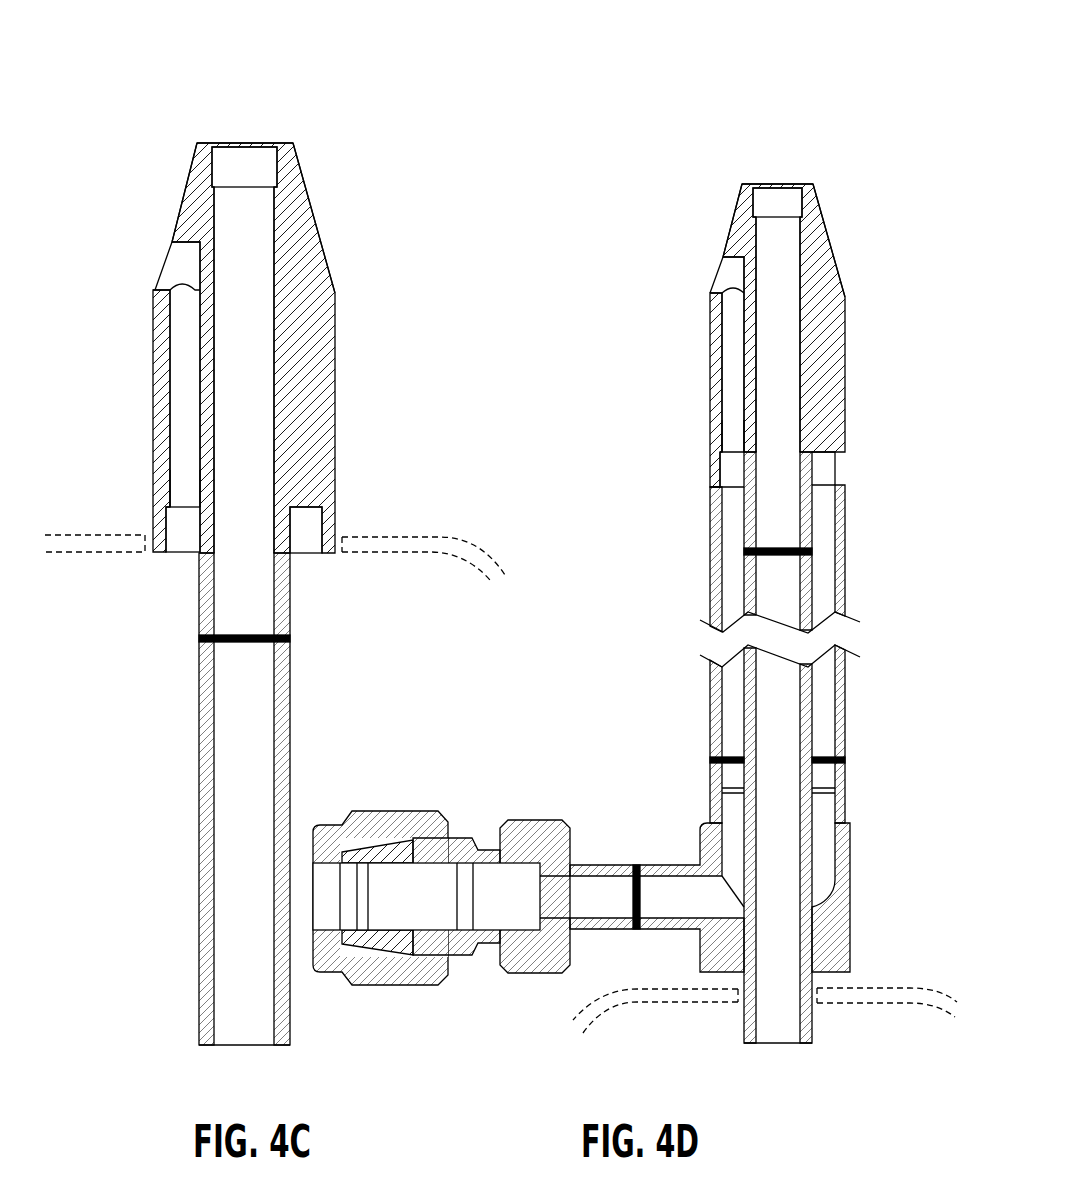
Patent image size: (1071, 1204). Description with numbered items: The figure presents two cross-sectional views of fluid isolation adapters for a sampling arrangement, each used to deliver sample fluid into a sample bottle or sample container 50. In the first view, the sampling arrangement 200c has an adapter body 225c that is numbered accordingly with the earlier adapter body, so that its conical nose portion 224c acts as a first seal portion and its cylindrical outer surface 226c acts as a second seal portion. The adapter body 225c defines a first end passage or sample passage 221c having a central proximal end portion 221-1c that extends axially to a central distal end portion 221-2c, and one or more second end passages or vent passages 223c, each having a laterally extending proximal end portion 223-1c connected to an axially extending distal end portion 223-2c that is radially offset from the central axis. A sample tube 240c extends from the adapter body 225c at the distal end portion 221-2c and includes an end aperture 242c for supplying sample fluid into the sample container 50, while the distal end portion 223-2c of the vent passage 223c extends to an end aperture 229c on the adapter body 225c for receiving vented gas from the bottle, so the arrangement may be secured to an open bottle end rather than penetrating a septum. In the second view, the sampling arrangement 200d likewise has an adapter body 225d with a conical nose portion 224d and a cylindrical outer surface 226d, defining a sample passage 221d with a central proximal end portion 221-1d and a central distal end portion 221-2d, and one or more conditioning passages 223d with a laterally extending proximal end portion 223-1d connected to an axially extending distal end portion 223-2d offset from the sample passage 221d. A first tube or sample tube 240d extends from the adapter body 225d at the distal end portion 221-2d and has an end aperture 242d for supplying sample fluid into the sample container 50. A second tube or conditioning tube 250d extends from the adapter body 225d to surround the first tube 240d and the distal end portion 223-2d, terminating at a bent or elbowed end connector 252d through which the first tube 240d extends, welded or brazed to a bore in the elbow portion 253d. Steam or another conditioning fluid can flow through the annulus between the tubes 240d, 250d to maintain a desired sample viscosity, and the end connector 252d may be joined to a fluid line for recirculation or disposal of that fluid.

In FIG. 4C, the nozzle assembly 200c is at (389, 174).
In FIG. 4C, the first end passage 221c is at (263, 473).
In FIG. 4C, the central proximal end portion 221-1c is at (212, 172).
In FIG. 4C, the central distal end portion 221-2c is at (277, 503).
In FIG. 4C, the second end passage 223c is at (181, 423).
In FIG. 4C, the laterally extending proximal end portion 223-1c is at (185, 243).
In FIG. 4C, the axially extending distal end portion 223-2c is at (198, 481).
In FIG. 4C, the tapered nozzle tip 224c is at (185, 183).
In FIG. 4C, the adapter body 225c is at (317, 380).
In FIG. 4C, the sleeve 226c is at (155, 367).
In FIG. 4C, the end aperture 229c is at (167, 527).
In FIG. 4C, the tube 240c is at (290, 710).
In FIG. 4C, the end aperture 242c is at (215, 1010).
In FIG. 4C, the sample container 50 is at (55, 552).
In FIG. 4D, the sample container 50 is at (897, 988).
In FIG. 4D, the nozzle assembly 200d is at (862, 176).
In FIG. 4D, the first end passage 221d is at (787, 407).
In FIG. 4D, the central proximal end portion 221-1d is at (802, 202).
In FIG. 4D, the central distal end portion 221-2d is at (802, 495).
In FIG. 4D, the second end passage 223d is at (732, 380).
In FIG. 4D, the laterally extending proximal end portion 223-1d is at (737, 257).
In FIG. 4D, the axially extending distal end portion 223-2d is at (738, 438).
In FIG. 4D, the tapered nozzle tip 224d is at (825, 220).
In FIG. 4D, the adapter body 225d is at (837, 398).
In FIG. 4D, the sleeve 226d is at (847, 335).
In FIG. 4D, the first tube 240d is at (812, 578).
In FIG. 4D, the end aperture 242d is at (790, 1043).
In FIG. 4D, the second tube 250d is at (850, 696).
In FIG. 4D, the end connector 252d is at (460, 965).
In FIG. 4D, the elbow portion 253d is at (850, 900).